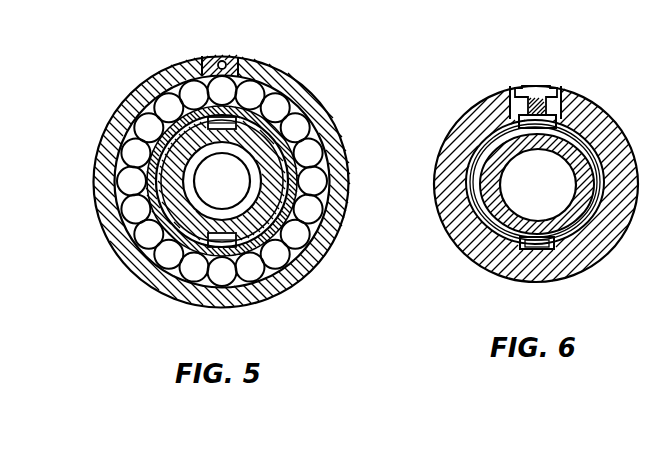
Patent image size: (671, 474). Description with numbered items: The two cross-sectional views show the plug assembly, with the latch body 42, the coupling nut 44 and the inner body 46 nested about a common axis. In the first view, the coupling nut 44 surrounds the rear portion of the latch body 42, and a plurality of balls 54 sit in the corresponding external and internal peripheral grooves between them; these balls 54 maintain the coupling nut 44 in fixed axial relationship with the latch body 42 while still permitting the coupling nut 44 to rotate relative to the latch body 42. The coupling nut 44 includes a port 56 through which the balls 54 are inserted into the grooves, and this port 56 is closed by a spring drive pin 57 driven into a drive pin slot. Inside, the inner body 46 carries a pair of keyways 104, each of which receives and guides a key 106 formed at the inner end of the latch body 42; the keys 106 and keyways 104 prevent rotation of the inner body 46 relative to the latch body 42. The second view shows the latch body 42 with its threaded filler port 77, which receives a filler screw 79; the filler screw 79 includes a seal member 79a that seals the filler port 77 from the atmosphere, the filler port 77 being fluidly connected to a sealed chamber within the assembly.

In FIG. 5, the latch body 42 is at (99, 141).
In FIG. 6, the latch body 42 is at (443, 134).
In FIG. 5, the coupling nut 44 is at (175, 68).
In FIG. 5, the inner body 46 is at (142, 90).
In FIG. 6, the inner body 46 is at (604, 100).
In FIG. 5, the balls 54 is at (294, 122).
In FIG. 5, the port 56 is at (226, 62).
In FIG. 5, the spring drive pin 57 is at (217, 57).
In FIG. 6, the threaded filler port 77 is at (565, 88).
In FIG. 6, the filler screw 79 is at (533, 88).
In FIG. 6, the seal member 79a is at (541, 88).
In FIG. 5, the keyway 104 is at (306, 268).
In FIG. 6, the keyway 104 is at (507, 277).
In FIG. 5, the key 106 is at (285, 74).
In FIG. 6, the key 106 is at (512, 90).